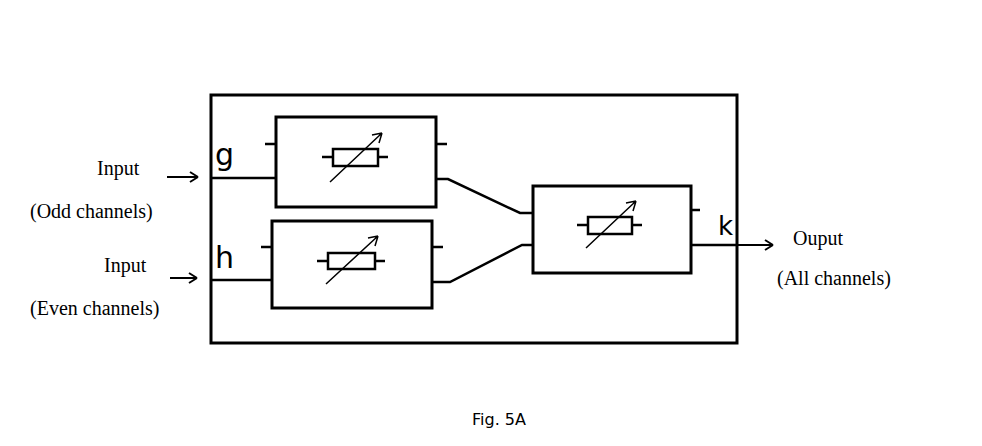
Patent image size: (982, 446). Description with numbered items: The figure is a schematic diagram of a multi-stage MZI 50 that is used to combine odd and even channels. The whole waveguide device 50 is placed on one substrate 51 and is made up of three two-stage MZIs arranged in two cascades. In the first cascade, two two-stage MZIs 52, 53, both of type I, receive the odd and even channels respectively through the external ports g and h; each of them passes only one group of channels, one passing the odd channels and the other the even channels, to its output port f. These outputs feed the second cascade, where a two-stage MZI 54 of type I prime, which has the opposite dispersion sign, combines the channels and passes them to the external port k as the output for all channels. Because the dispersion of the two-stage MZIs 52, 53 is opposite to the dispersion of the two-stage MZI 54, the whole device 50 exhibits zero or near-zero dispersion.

The multi-stage MZI 50 is at (218, 58).
The substrate 51 is at (705, 126).
The two-stage MZI of type I 52 is at (355, 117).
The two-stage MZI of type I 53 is at (392, 308).
The two-stage MZI of type I' 54 is at (615, 186).